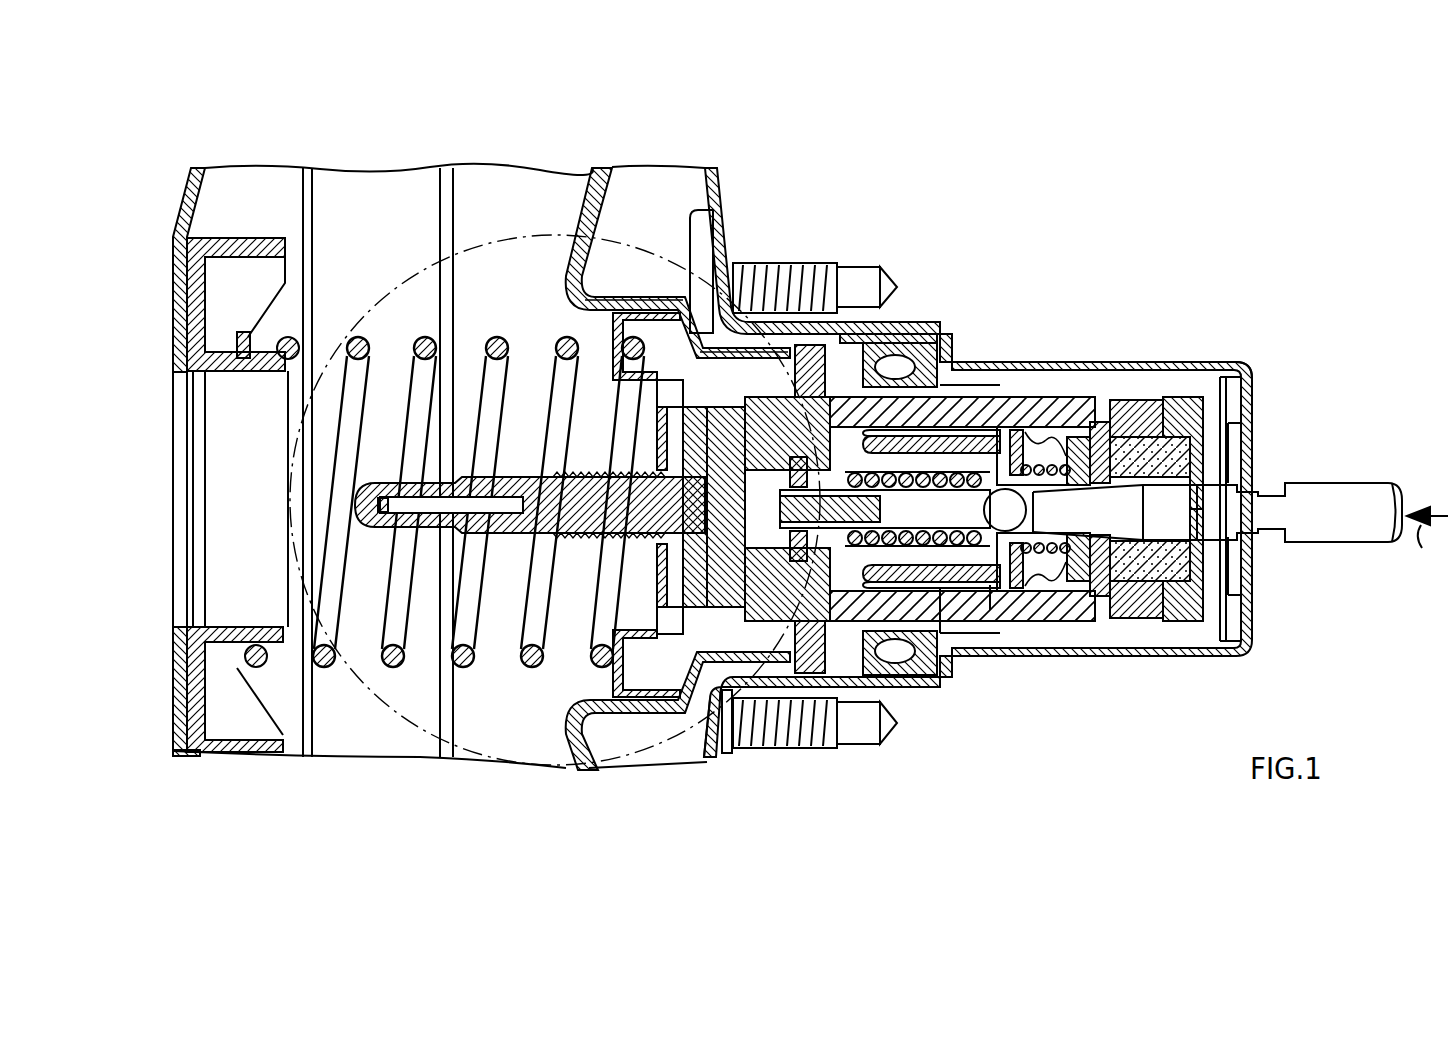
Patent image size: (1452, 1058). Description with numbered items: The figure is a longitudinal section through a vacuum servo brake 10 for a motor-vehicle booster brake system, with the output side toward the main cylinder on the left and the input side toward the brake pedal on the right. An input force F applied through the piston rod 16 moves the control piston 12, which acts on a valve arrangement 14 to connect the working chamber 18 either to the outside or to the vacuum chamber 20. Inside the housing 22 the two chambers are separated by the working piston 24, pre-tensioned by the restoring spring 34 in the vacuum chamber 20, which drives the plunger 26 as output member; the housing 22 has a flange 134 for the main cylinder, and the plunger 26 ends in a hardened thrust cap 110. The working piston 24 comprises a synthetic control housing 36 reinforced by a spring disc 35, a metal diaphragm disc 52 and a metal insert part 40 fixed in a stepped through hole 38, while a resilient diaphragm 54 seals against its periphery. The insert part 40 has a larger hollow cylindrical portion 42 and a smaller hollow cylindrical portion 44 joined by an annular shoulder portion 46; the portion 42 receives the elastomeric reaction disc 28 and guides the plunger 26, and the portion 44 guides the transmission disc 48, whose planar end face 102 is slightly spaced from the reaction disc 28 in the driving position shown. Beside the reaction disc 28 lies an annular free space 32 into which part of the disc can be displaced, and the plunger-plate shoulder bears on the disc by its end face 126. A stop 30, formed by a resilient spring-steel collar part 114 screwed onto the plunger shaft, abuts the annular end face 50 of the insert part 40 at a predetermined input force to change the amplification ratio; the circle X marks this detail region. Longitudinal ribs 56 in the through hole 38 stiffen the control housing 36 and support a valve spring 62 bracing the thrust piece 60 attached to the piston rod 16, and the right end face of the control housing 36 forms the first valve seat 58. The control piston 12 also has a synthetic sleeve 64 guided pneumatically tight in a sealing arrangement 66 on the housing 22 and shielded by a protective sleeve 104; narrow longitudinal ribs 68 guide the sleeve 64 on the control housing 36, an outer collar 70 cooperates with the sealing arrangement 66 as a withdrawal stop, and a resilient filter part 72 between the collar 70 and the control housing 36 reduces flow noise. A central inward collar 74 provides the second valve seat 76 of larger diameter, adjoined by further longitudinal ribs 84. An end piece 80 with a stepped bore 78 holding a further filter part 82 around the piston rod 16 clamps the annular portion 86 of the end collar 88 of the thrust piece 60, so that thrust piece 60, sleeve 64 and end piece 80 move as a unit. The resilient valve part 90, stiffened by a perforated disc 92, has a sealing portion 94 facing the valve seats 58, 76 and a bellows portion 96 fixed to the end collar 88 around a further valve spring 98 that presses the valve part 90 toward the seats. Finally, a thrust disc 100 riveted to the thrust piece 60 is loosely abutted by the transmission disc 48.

The vacuum servo brake 10 is at (784, 186).
The control piston 12 is at (1161, 386).
The valve arrangement 14 is at (1092, 478).
The piston rod 16 is at (1343, 527).
The working chamber 18 is at (618, 285).
The vacuum chamber 20 is at (373, 222).
The housing 22 is at (718, 183).
The working piston 24 is at (628, 705).
The plunger 26 is at (508, 545).
The reaction disc 28 is at (740, 690).
The stop 30 is at (646, 590).
The free space 32 is at (690, 430).
The restoring spring 34 is at (352, 340).
The spring disc 35 is at (618, 342).
The control housing 36 is at (655, 325).
The through hole 38 is at (950, 614).
The insert part 40 is at (736, 400).
The hollow cylindrical portion 42 is at (680, 402).
The hollow cylindrical portion 44 is at (772, 430).
The annular shoulder portion 46 is at (755, 420).
The transmission disc 48 is at (792, 420).
The annular end face 50 is at (680, 597).
The diaphragm disc 52 is at (598, 198).
The diaphragm 54 is at (580, 240).
The longitudinal ribs 56 is at (842, 498).
The first valve seat 58 is at (1000, 562).
The thrust piece 60 is at (948, 515).
The valve spring 62 is at (935, 420).
The sleeve 64 is at (1045, 600).
The sealing arrangement 66 is at (916, 350).
The longitudinal ribs 68 is at (1010, 560).
The collar 70 is at (845, 692).
The filter part 72 is at (800, 722).
The collar 74 is at (990, 612).
The second valve seat 76 is at (1031, 438).
The stepped bore 78 is at (1195, 462).
The end piece 80 is at (1210, 415).
The filter part 82 is at (1145, 440).
The longitudinal ribs 84 is at (1086, 403).
The annular portion 86 is at (1112, 602).
The end collar 88 is at (1195, 576).
The valve part 90 is at (1066, 592).
The perforated disc 92 is at (1100, 455).
The sealing portion 94 is at (1040, 572).
The bellows portion 96 is at (1050, 602).
The further valve spring 98 is at (1045, 546).
The thrust disc 100 is at (826, 428).
The end face 102 is at (648, 545).
The protective sleeve 104 is at (1246, 384).
The thrust cap 110 is at (370, 508).
The collar part 114 is at (596, 466).
The end face 126 is at (760, 700).
The flange 134 is at (183, 345).
The detail circle X is at (408, 277).
The input force F is at (1427, 543).